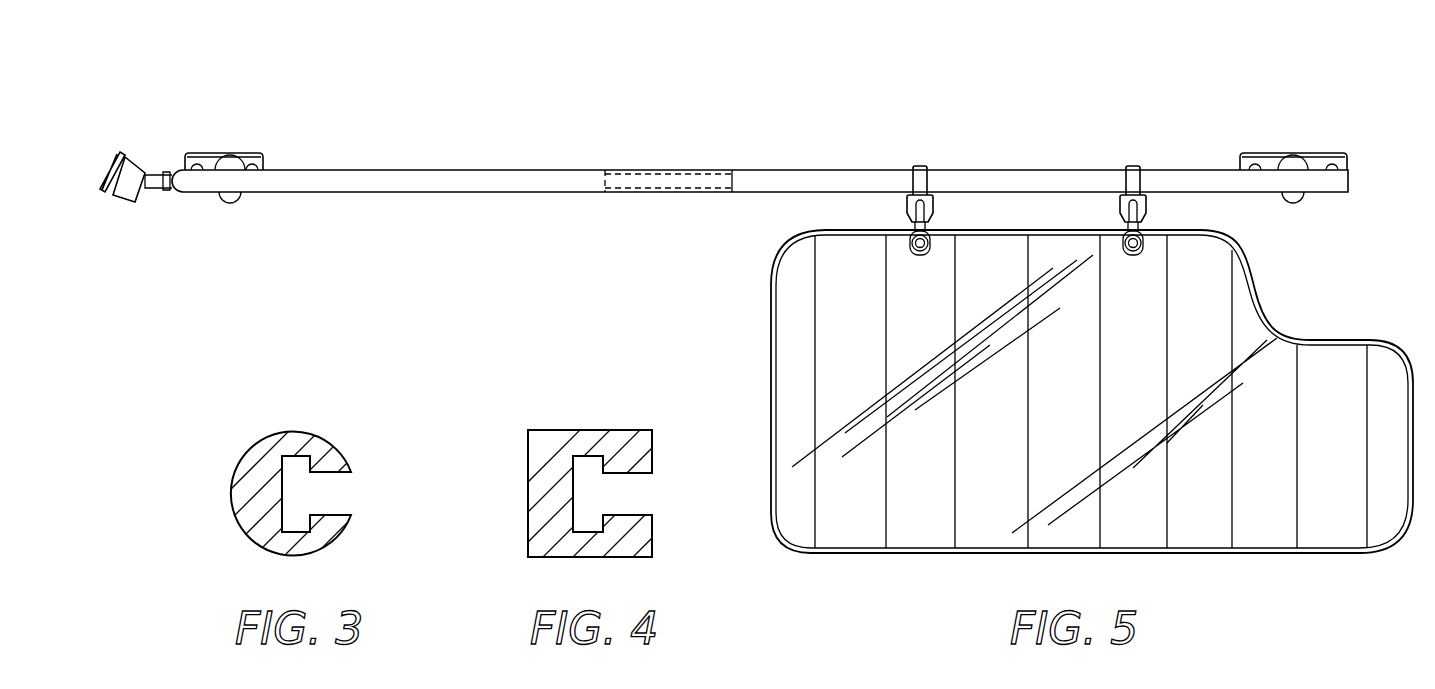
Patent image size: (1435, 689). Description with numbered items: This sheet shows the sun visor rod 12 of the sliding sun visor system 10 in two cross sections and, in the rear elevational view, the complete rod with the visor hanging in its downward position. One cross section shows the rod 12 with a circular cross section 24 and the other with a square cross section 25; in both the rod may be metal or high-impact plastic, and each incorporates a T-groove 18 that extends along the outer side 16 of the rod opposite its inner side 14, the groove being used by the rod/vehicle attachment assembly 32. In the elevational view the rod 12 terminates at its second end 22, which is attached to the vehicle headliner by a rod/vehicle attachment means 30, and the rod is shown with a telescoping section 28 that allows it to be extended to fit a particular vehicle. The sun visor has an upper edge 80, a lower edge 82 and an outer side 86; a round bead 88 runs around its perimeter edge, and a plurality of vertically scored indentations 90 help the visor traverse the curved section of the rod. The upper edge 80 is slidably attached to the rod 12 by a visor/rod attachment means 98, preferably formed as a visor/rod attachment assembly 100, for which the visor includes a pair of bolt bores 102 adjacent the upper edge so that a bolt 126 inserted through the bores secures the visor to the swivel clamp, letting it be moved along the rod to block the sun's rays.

In FIG. 5, the sun visor assembly 10 is at (1157, 60).
In FIG. 3, the sun visor rod 12 is at (365, 524).
In FIG. 4, the sun visor rod 12 is at (660, 519).
In FIG. 5, the sun visor rod 12 is at (756, 172).
In FIG. 5, the inner side 14 is at (756, 172).
In FIG. 5, the outer side 16 is at (756, 172).
In FIG. 3, the T-groove 18 is at (312, 498).
In FIG. 4, the T-groove 18 is at (610, 498).
In FIG. 5, the second end 22 is at (768, 178).
In FIG. 3, the circular cross section 24 is at (287, 440).
In FIG. 4, the square cross section 25 is at (550, 433).
In FIG. 5, the telescoping section 28 is at (648, 178).
In FIG. 5, the rod/vehicle attachment means 30 is at (260, 160).
In FIG. 5, the rod/vehicle attachment assembly 32 is at (1343, 123).
In FIG. 5, the upper edge 80 is at (1058, 397).
In FIG. 5, the lower edge 82 is at (1058, 397).
In FIG. 5, the outer side 86 is at (1058, 397).
In FIG. 5, the round bead 88 is at (1058, 397).
In FIG. 5, the vertically scored indentations 90 is at (1058, 228).
In FIG. 5, the visor/rod attachment means 98 is at (1027, 171).
In FIG. 5, the visor/rod attachment assembly 100 is at (913, 165).
In FIG. 5, the bolt bores 102 is at (884, 258).
In FIG. 5, the bolt 126 is at (910, 243).